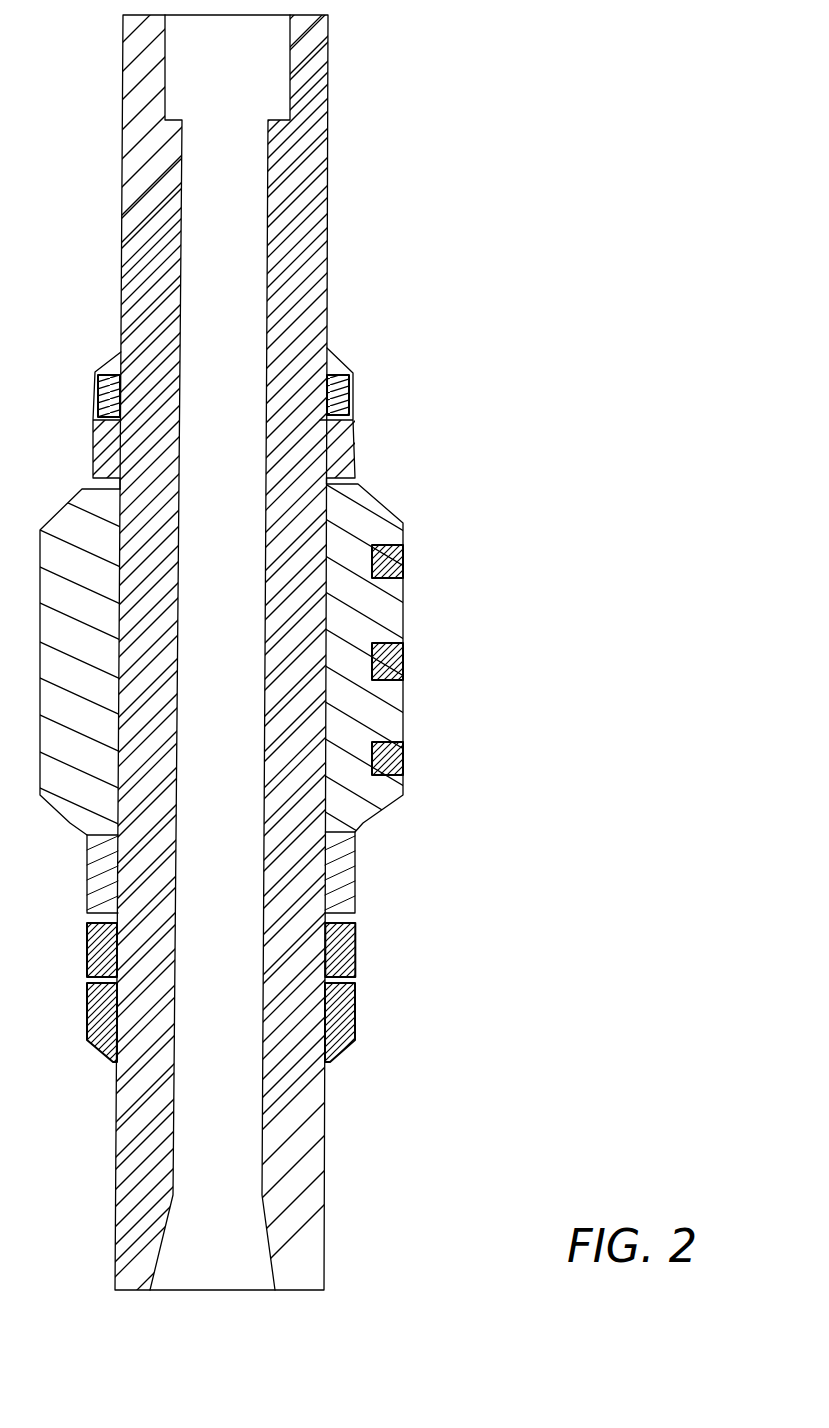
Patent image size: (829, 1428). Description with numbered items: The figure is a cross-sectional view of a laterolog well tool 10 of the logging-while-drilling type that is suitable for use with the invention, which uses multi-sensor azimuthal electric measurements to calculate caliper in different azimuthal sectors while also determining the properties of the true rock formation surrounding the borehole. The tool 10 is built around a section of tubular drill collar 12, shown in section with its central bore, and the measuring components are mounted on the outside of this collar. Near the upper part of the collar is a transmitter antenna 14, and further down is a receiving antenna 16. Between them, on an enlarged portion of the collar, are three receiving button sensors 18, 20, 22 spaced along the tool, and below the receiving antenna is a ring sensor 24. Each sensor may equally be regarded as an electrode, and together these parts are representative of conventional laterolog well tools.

The tool 10 is at (342, 92).
The tubular drill collar 12 is at (312, 313).
The transmitter antenna 14 is at (347, 390).
The receiving antenna 16 is at (350, 952).
The receiving button sensor 18 is at (403, 565).
The receiving button sensor 20 is at (402, 665).
The receiving button sensor 22 is at (402, 758).
The ring sensor 24 is at (350, 1018).